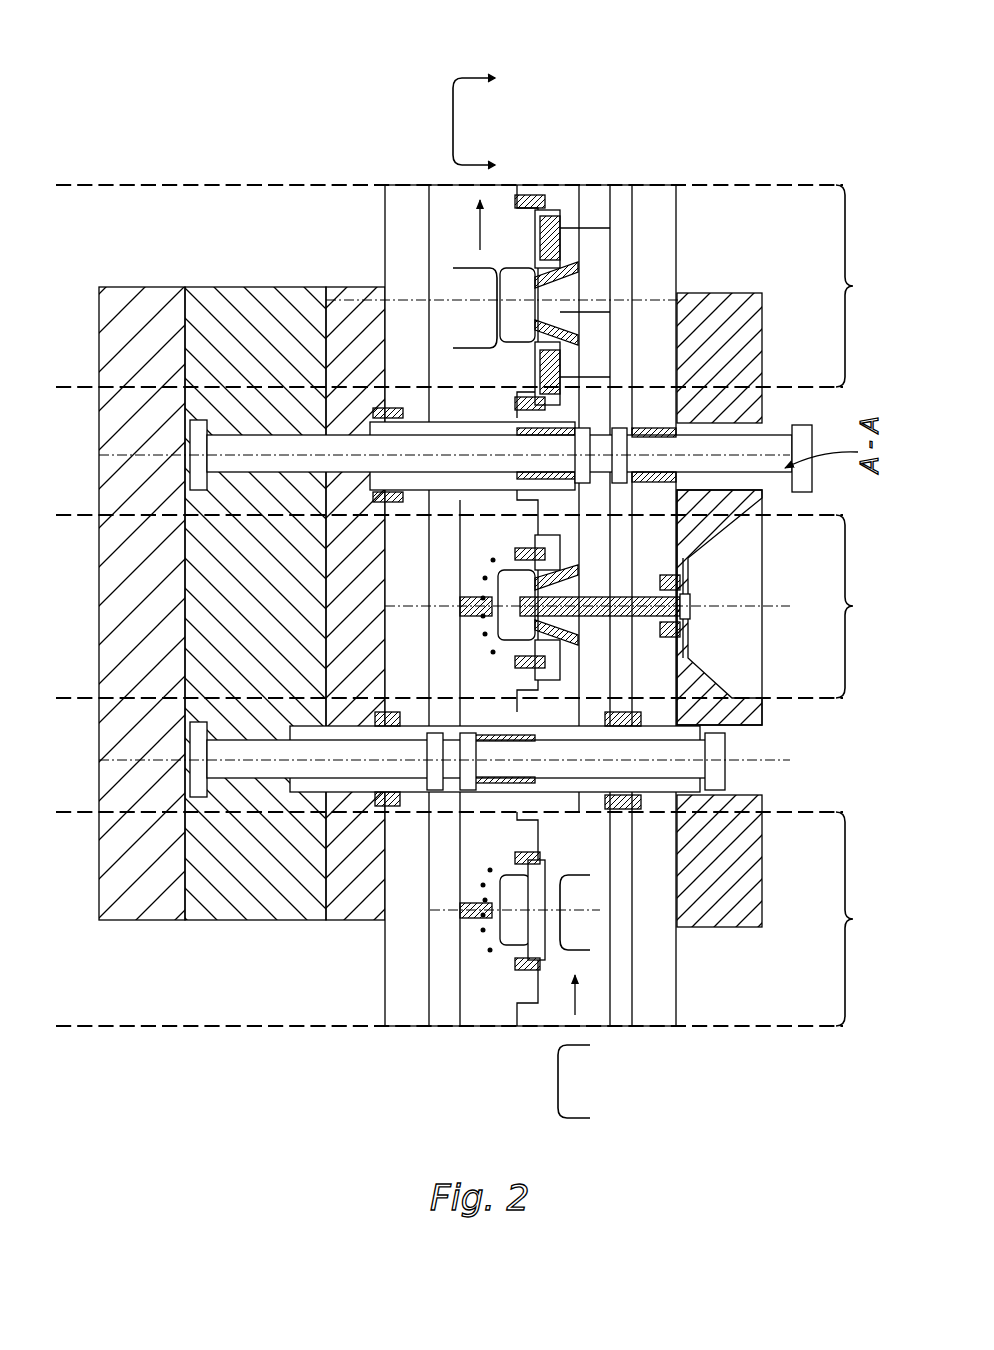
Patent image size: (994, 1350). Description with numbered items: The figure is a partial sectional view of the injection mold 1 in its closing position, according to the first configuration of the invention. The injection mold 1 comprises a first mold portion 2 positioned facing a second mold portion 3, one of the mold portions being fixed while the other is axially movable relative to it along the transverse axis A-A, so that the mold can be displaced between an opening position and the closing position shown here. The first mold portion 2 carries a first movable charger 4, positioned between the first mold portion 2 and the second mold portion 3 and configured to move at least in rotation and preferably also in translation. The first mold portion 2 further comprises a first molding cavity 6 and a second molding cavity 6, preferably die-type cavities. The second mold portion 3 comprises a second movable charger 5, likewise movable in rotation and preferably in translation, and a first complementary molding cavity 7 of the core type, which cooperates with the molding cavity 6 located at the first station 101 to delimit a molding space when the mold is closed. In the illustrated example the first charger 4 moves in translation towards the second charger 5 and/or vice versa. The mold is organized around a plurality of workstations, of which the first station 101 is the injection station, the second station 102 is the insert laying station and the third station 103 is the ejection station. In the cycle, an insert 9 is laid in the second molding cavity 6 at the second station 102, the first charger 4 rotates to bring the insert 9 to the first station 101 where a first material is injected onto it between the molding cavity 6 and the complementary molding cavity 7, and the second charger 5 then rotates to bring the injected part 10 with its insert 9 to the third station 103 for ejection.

The injection mold 1 is at (700, 1098).
The first mold portion 2 is at (264, 275).
The second mold portion 3 is at (714, 275).
The first movable charger 4 is at (478, 1005).
The second movable charger 5 is at (562, 205).
The molding cavity 6 is at (535, 920).
The first complementary molding cavity 7 is at (555, 270).
The insert 9 is at (587, 1130).
The injected part 10 is at (487, 68).
The first station 101 is at (872, 606).
The second station 102 is at (872, 919).
The third station 103 is at (872, 286).